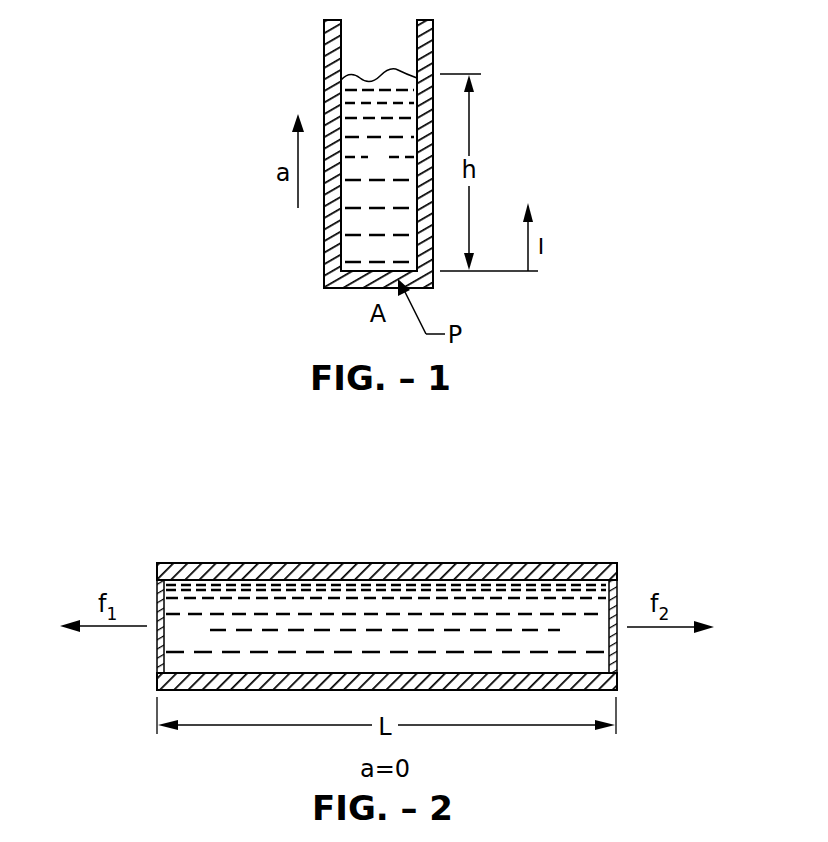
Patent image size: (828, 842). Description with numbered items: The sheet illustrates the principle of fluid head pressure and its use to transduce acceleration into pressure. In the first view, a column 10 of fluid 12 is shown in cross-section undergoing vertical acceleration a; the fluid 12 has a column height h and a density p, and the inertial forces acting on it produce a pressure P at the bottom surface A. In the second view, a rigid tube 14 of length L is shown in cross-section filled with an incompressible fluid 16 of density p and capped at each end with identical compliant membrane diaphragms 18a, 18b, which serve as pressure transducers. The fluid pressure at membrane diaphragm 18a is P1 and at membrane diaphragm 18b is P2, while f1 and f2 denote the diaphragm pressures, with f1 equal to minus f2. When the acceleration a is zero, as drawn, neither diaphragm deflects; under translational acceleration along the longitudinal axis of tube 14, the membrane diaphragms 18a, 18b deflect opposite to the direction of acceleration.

In FIG. 1, the column 10 is at (283, 40).
In FIG. 1, the fluid 12 is at (352, 128).
In FIG. 2, the rigid tube 14 is at (524, 562).
In FIG. 2, the incompressible fluid 16 is at (332, 624).
In FIG. 2, the membrane diaphragm 18a is at (157, 662).
In FIG. 2, the membrane diaphragm 18b is at (617, 655).